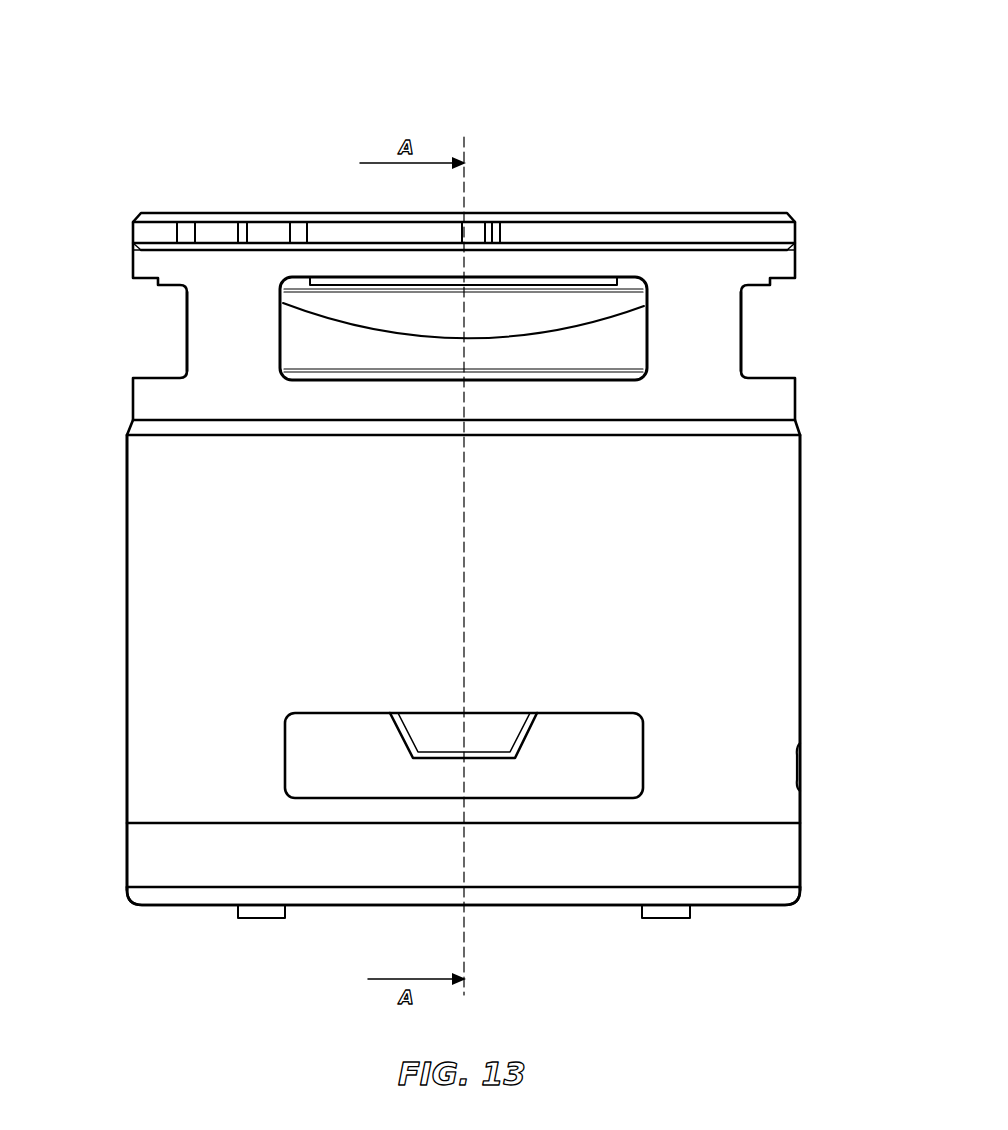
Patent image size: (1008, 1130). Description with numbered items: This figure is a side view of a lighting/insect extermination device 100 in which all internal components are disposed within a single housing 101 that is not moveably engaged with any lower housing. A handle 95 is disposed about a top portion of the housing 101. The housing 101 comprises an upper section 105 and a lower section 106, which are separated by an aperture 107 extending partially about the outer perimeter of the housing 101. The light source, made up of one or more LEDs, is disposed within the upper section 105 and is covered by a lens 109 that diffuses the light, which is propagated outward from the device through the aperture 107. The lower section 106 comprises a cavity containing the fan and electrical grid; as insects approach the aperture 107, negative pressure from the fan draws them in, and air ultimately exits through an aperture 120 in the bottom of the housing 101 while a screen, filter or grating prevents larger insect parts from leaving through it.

The lighting/insect extermination device 100 is at (147, 96).
The handle 95 is at (218, 238).
The upper section 105 is at (783, 232).
The aperture 107 is at (761, 308).
The lens 109 is at (573, 328).
The lower section 106 is at (775, 528).
The housing 101 is at (126, 601).
The aperture 120 is at (148, 852).